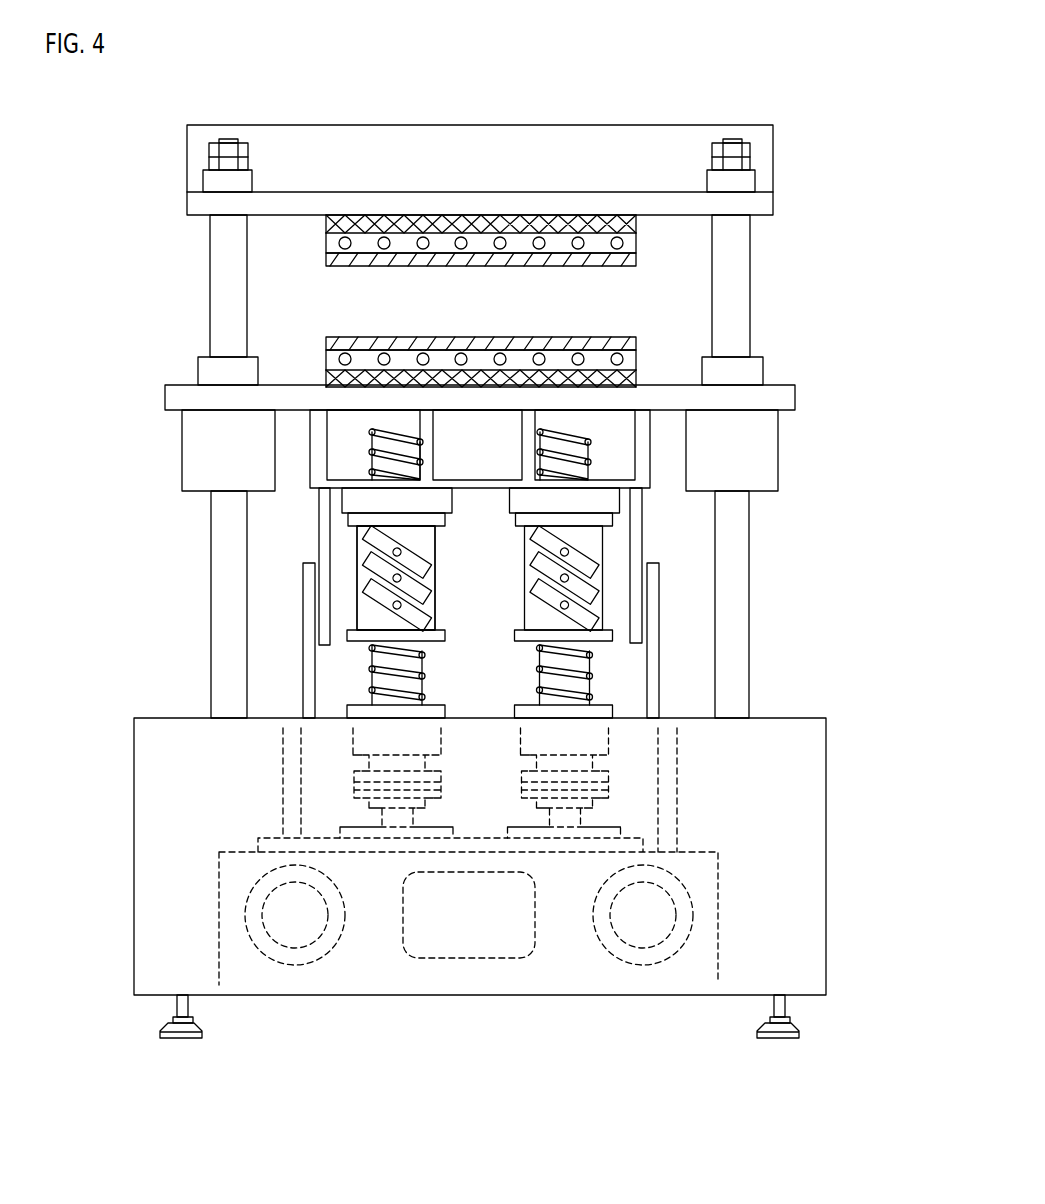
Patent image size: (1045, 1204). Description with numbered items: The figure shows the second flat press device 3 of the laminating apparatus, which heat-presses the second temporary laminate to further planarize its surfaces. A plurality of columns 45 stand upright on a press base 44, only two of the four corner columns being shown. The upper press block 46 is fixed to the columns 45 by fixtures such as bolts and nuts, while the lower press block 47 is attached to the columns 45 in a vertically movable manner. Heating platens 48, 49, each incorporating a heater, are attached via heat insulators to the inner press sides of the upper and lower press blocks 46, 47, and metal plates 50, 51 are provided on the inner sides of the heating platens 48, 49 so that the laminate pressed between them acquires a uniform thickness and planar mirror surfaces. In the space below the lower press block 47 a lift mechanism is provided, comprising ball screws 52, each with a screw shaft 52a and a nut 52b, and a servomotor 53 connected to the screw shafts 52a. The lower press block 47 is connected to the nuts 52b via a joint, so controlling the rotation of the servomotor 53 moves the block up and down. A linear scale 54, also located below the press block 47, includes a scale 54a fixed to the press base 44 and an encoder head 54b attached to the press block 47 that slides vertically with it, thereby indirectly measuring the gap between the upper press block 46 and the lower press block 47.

The second flat press device 3 is at (800, 313).
The press base 44 is at (163, 717).
The column 45 is at (222, 577).
The upper press block 46 is at (200, 205).
The lower press block 47 is at (175, 400).
The heating platen 48 is at (327, 240).
The heating platen 49 is at (327, 360).
The metal plate 50 is at (327, 258).
The metal plate 51 is at (327, 343).
The ball screw 52 is at (866, 612).
The screw shaft 52a is at (425, 660).
The nut 52b is at (432, 606).
The servomotor 53 is at (693, 838).
The linear scale 54 is at (866, 498).
The scale 54a is at (654, 578).
The encoder head 54b is at (638, 550).